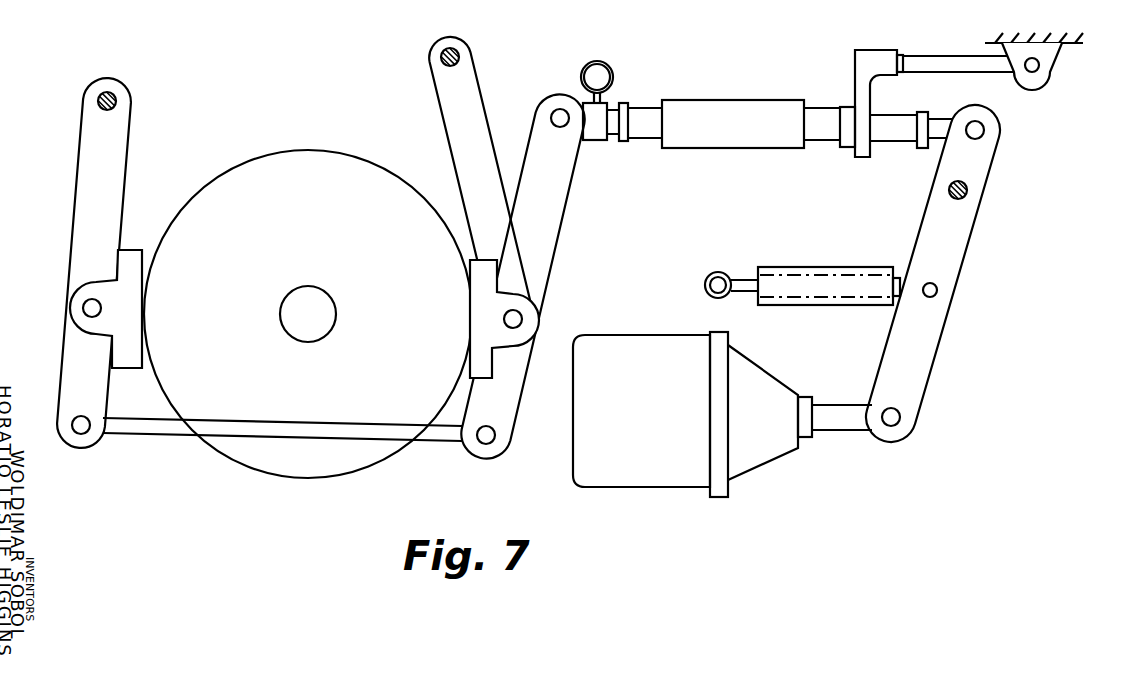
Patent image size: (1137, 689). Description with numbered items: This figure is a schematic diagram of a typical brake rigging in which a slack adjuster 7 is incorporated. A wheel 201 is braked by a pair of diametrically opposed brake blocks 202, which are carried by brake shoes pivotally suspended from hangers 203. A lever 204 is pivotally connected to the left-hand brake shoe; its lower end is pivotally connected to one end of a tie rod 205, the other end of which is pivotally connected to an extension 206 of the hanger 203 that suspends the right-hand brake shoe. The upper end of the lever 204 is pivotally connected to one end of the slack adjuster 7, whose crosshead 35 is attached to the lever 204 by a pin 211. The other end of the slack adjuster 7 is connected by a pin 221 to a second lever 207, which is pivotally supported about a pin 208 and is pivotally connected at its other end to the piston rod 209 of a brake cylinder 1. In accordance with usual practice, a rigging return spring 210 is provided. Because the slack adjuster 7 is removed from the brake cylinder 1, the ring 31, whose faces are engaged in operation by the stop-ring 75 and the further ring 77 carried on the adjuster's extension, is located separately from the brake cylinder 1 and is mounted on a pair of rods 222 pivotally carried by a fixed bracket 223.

The brake cylinder 1 is at (782, 466).
The slack adjuster 7 is at (697, 97).
The ring 31 is at (860, 156).
The crosshead 35 is at (598, 112).
The stop-ring 75 is at (920, 152).
The further ring 77 is at (843, 107).
The wheel 201 is at (308, 151).
The brake blocks 202 is at (136, 256).
The hangers 203 is at (118, 128).
The lever 204 is at (555, 214).
The tie rod 205 is at (187, 430).
The extension 206 is at (100, 398).
The second lever 207 is at (955, 278).
The pin 208 is at (970, 191).
The piston rod 209 is at (838, 410).
The rigging return spring 210 is at (802, 270).
The pin 211 is at (567, 126).
The pin 221 is at (985, 131).
The rods 222 is at (948, 57).
The fixed bracket 223 is at (1050, 61).